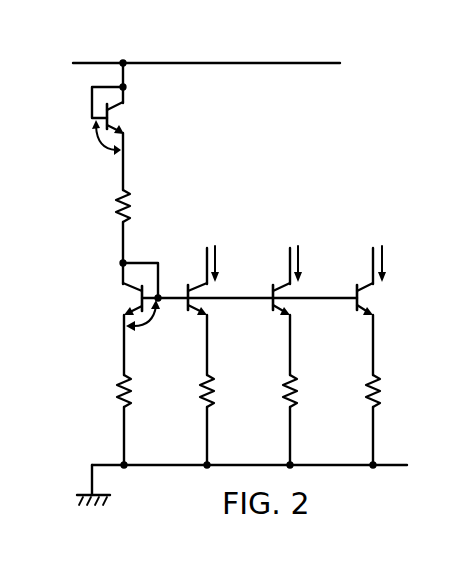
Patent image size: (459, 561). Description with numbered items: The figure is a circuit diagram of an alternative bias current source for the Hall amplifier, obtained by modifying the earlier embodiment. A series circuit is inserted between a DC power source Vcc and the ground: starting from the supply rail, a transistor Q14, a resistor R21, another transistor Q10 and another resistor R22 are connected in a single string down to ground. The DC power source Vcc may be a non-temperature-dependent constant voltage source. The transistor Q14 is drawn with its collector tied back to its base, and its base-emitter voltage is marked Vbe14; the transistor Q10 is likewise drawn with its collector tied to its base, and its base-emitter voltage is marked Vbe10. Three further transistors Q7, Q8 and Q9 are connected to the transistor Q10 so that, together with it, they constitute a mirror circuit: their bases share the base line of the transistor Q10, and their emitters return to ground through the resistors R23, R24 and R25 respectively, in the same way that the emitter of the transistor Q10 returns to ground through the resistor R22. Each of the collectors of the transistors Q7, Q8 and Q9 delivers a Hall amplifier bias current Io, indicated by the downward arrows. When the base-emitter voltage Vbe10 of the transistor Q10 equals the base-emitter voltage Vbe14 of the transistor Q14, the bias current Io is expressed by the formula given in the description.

The DC power source Vcc is at (200, 49).
The transistor Q14 is at (130, 110).
The base-emitter voltage of transistor Q14 Vbe14 is at (83, 140).
The resistor R21 is at (98, 206).
The transistor Q10 is at (119, 319).
The base-emitter voltage of transistor Q10 Vbe10 is at (158, 324).
The transistor Q7 is at (190, 311).
The transistor Q8 is at (272, 311).
The transistor Q9 is at (356, 311).
The Hall amplifier bias current Io is at (301, 253).
The resistor R22 is at (99, 391).
The resistor R23 is at (183, 391).
The resistor R24 is at (267, 391).
The resistor R25 is at (348, 391).